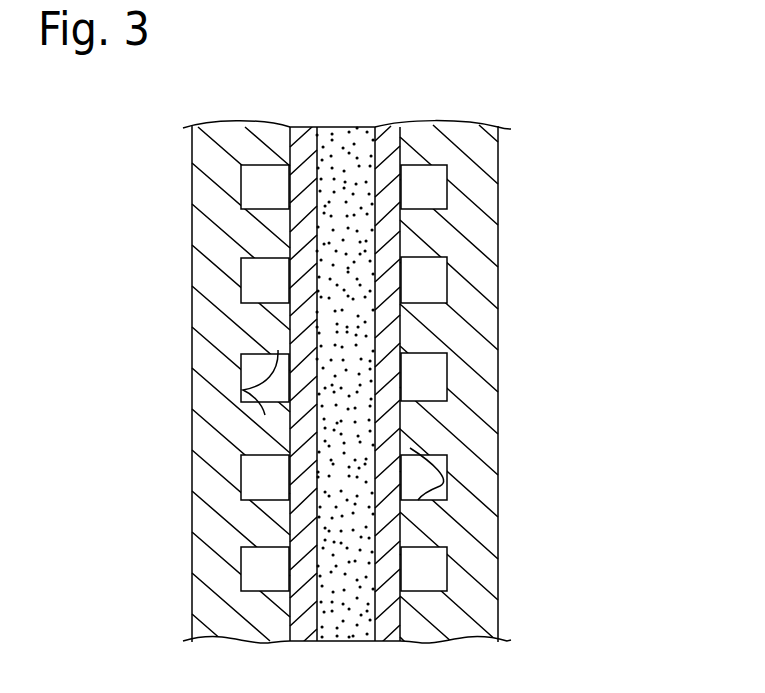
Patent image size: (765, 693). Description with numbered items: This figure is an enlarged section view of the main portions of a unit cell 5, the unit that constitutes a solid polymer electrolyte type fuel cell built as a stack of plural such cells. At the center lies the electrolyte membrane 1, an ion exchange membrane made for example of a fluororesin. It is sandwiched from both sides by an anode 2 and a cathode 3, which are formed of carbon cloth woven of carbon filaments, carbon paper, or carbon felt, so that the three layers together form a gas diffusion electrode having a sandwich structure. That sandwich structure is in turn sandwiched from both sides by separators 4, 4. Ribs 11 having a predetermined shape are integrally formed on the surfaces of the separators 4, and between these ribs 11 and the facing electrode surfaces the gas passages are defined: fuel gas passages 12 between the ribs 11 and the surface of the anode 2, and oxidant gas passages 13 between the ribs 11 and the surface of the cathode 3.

The electrolyte membrane 1 is at (347, 128).
The anode 2 is at (392, 128).
The cathode 3 is at (297, 129).
The separator 4 is at (232, 124).
The unit cell 5 is at (190, 148).
The rib 11 is at (243, 390).
The fuel gas passage 12 is at (437, 283).
The oxidant gas passage 13 is at (250, 273).